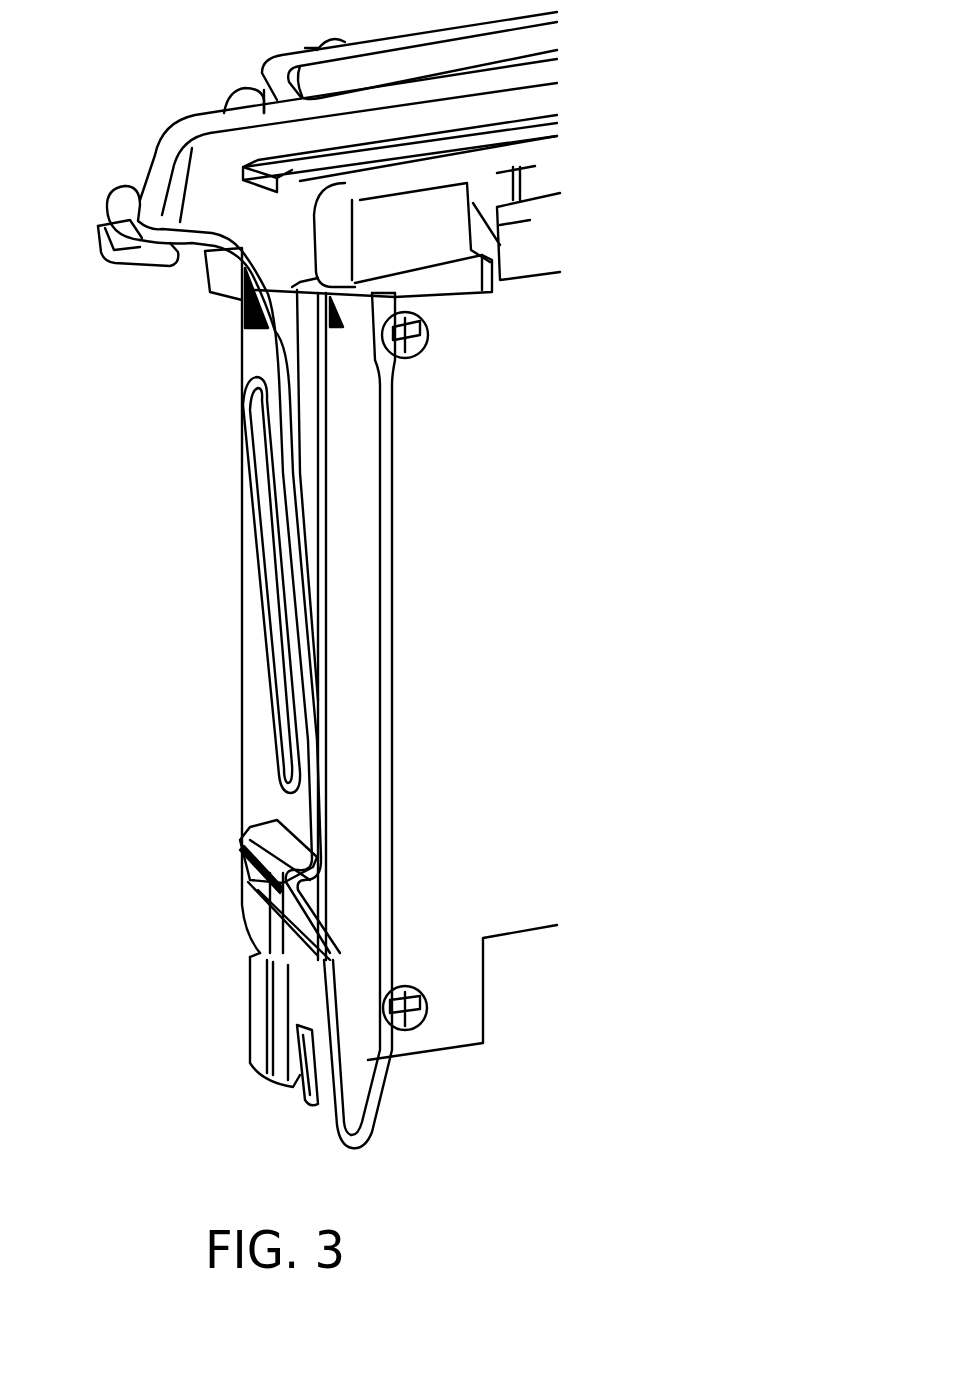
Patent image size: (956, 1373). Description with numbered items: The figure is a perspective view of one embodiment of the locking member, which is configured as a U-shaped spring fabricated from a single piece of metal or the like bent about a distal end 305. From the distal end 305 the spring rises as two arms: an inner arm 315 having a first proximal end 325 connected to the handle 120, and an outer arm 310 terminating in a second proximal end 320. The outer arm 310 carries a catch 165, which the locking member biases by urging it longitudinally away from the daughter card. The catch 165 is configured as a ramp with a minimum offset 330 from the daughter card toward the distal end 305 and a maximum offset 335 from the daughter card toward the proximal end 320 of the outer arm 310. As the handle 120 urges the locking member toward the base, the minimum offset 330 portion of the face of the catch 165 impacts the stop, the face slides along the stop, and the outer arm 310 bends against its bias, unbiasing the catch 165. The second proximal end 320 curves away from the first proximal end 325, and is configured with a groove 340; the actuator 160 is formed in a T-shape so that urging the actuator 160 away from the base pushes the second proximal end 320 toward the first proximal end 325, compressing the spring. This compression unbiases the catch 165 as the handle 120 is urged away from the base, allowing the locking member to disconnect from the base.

The handle 120 is at (317, 50).
The groove 340 is at (133, 192).
The second proximal end 320 is at (118, 212).
The actuator 160 is at (132, 268).
The first proximal end 325 is at (395, 422).
The outer arm 310 is at (258, 598).
The inner arm 315 is at (392, 673).
The catch 165 is at (250, 832).
The maximum offset 335 is at (242, 852).
The minimum offset 330 is at (265, 952).
The distal end 305 is at (298, 1098).